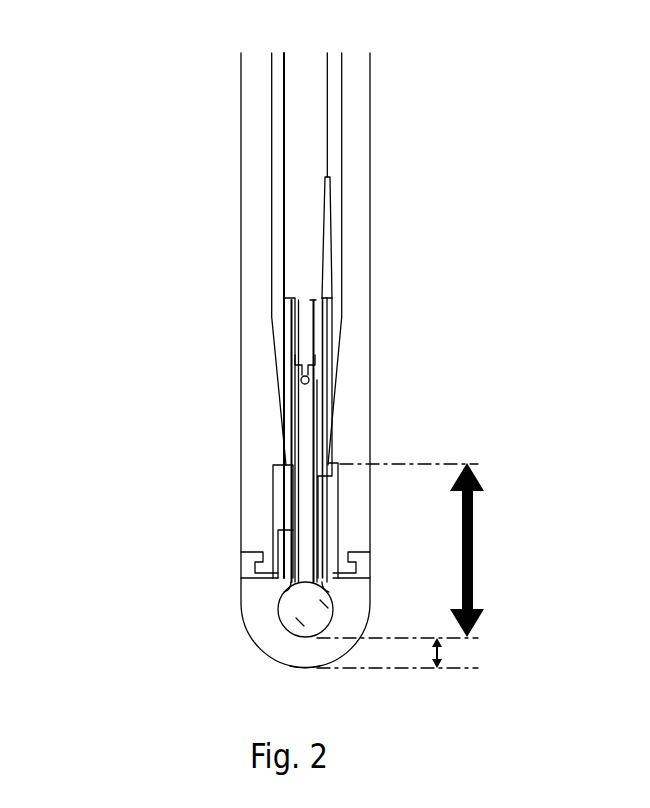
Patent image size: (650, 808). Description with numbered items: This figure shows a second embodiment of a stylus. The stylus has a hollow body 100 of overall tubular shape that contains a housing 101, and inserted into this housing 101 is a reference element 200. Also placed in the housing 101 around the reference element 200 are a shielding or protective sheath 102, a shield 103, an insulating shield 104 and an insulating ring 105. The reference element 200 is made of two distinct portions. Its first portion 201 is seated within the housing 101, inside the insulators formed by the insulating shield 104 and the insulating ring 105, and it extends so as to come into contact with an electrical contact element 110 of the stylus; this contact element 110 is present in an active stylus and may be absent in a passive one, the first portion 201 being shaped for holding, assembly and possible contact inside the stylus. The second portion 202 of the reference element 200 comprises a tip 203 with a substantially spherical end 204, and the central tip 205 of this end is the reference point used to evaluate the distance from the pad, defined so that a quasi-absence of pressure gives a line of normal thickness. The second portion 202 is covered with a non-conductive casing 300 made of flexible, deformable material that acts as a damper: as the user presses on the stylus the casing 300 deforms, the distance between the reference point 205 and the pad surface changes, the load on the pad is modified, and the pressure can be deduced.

The hollow body 100 is at (257, 200).
The housing 101 is at (312, 72).
The shielding or protective sheath 102 is at (285, 352).
The shield 103 is at (287, 485).
The insulating shield 104 is at (298, 543).
The insulating ring 105 is at (260, 578).
The electrical contact element 110 is at (317, 383).
The reference element 200 is at (320, 424).
The first portion 201 is at (337, 464).
The second portion 202 is at (290, 592).
The tip 203 is at (325, 605).
The substantially spherical end 204 is at (300, 622).
The central tip 205 is at (311, 610).
The non-conductive casing 300 is at (262, 627).